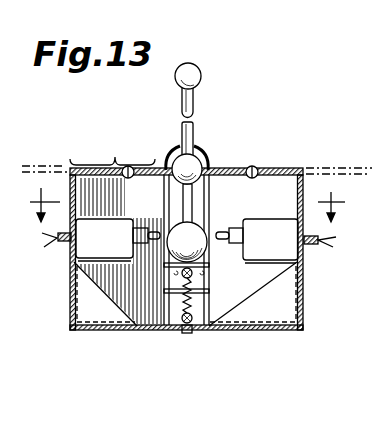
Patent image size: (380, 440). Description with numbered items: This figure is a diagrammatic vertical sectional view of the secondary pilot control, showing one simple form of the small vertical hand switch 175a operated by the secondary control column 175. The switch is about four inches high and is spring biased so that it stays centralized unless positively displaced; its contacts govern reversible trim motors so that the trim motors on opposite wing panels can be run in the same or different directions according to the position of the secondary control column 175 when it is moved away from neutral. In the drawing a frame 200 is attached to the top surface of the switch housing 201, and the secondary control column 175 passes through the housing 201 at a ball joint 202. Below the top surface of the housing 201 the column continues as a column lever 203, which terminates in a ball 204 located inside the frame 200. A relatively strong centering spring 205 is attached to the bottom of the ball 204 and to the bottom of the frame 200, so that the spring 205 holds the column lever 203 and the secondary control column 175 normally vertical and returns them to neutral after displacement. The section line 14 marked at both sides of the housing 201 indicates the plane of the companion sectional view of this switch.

The section line 14 is at (185, 204).
The secondary control column 175 is at (196, 140).
The vertical hand switch 175a is at (112, 148).
The frame 200 is at (132, 297).
The switch housing 201 is at (300, 167).
The ball joint 202 is at (204, 165).
The column lever 203 is at (200, 201).
The ball 204 is at (209, 253).
The centering spring 205 is at (185, 300).